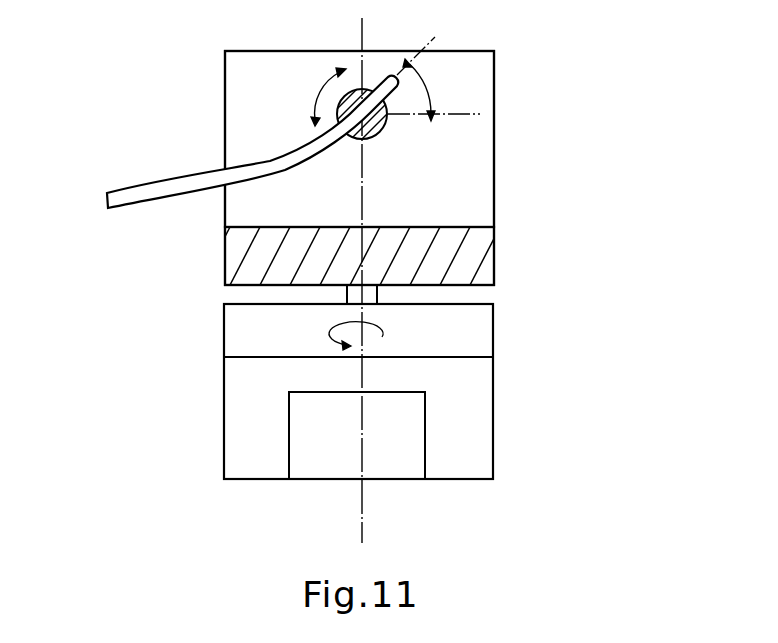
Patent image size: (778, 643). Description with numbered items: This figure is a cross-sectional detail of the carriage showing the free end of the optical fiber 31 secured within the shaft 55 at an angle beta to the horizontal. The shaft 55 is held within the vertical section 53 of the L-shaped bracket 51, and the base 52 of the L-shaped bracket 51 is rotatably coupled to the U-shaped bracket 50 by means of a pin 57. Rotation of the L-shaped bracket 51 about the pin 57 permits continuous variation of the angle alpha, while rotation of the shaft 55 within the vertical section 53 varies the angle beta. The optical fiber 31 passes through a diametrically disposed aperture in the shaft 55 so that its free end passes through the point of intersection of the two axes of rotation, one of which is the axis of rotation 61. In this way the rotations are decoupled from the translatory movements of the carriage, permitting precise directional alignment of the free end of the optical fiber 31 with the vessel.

The optical fiber 31 is at (100, 198).
The U-shaped bracket 50 is at (493, 428).
The L-shaped bracket 51 is at (496, 132).
The base 52 is at (494, 258).
The vertical section 53 is at (248, 88).
The shaft 55 is at (378, 135).
The pin 57 is at (372, 297).
The axis of rotation 61 is at (362, 514).